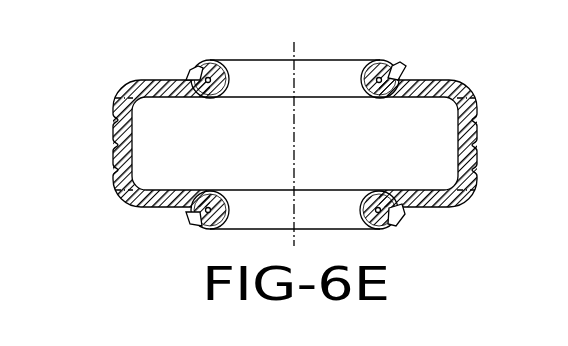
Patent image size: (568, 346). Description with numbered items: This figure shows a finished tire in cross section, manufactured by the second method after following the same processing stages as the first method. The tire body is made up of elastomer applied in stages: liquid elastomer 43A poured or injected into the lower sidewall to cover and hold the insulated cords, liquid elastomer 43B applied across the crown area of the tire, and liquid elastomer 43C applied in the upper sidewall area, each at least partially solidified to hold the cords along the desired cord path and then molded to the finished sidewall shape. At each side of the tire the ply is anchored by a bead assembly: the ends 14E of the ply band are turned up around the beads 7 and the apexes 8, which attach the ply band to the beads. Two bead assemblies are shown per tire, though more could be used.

The bead 7 is at (206, 72).
The apex 8 is at (386, 74).
The end of ply band 14E is at (398, 73).
The liquid elastomer 43A is at (172, 206).
The liquid elastomer 43B is at (120, 167).
The liquid elastomer 43C is at (162, 83).